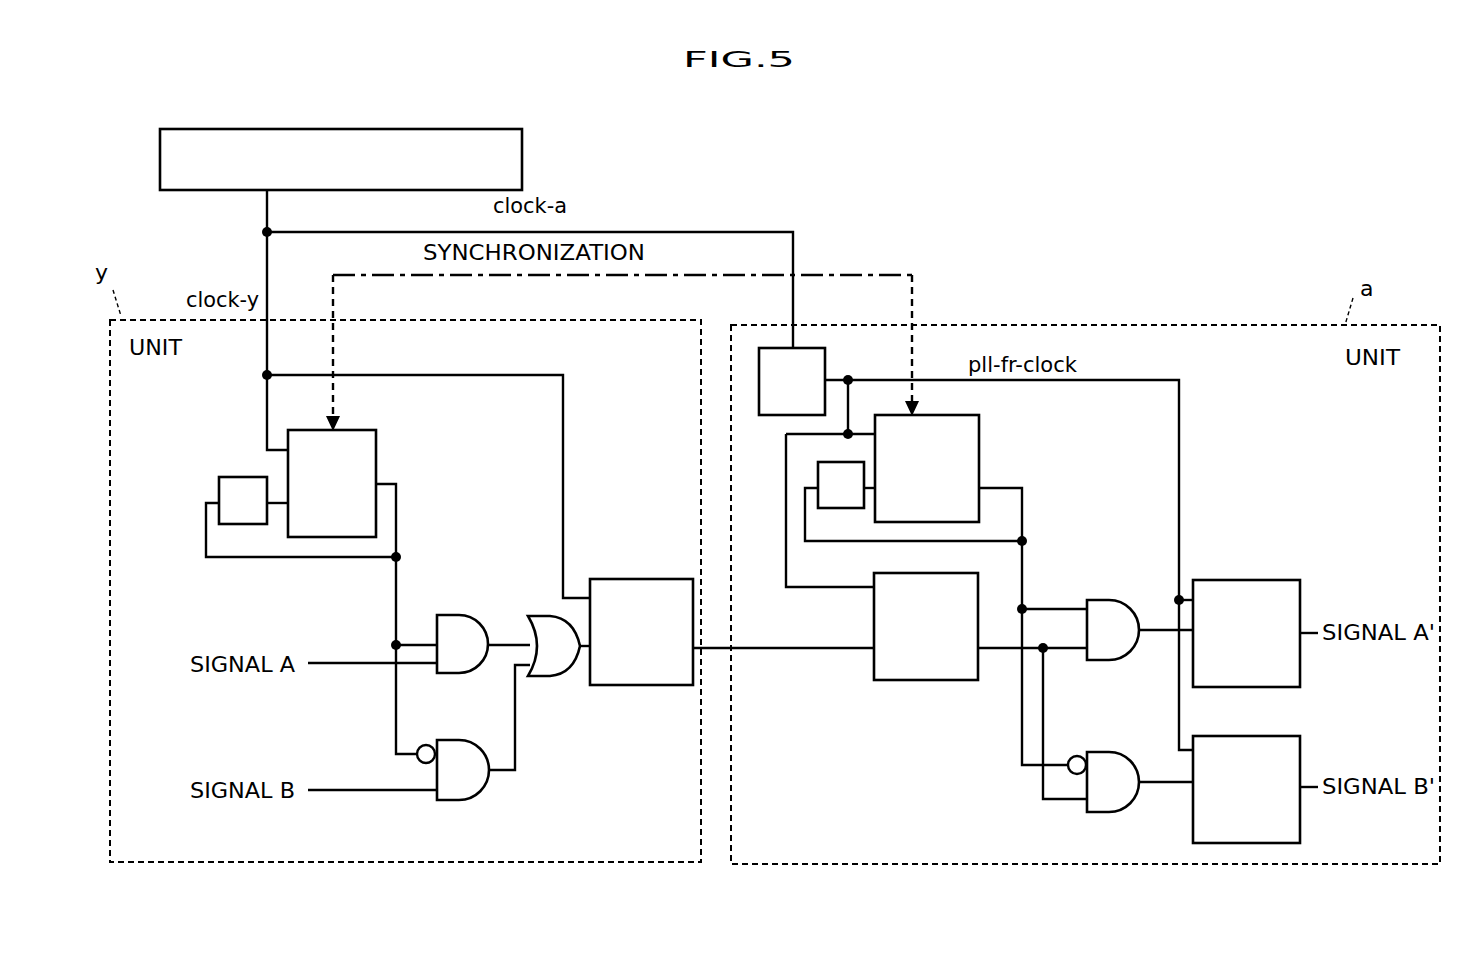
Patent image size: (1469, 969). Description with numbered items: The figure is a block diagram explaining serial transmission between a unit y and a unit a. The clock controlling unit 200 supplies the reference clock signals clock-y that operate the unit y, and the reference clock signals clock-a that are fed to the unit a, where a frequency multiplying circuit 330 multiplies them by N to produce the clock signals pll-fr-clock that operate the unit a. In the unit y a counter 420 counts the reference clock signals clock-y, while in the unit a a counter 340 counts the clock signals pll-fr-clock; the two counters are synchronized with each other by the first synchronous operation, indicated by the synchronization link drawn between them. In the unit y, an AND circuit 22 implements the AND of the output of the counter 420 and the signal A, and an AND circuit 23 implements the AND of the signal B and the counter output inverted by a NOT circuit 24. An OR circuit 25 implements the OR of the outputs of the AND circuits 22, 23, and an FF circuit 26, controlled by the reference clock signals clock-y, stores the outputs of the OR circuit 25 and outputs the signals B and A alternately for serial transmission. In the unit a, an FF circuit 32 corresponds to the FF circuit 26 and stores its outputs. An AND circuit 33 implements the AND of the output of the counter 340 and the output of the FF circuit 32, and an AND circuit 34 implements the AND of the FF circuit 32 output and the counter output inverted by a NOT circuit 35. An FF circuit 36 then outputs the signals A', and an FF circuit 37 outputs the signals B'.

The clock controlling unit 200 is at (405, 129).
The counter 420 is at (376, 448).
The AND circuit 22 is at (458, 617).
The AND circuit 23 is at (458, 742).
The NOT circuit 24 is at (427, 738).
The OR circuit 25 is at (548, 677).
The FF circuit 26 is at (653, 585).
The frequency multiplying circuit 330 is at (825, 362).
The counter 340 is at (979, 430).
The FF circuit 32 is at (963, 578).
The AND circuit 33 is at (1110, 603).
The AND circuit 34 is at (1110, 756).
The NOT circuit 35 is at (1072, 774).
The FF circuit 36 is at (1247, 582).
The FF circuit 37 is at (1247, 738).